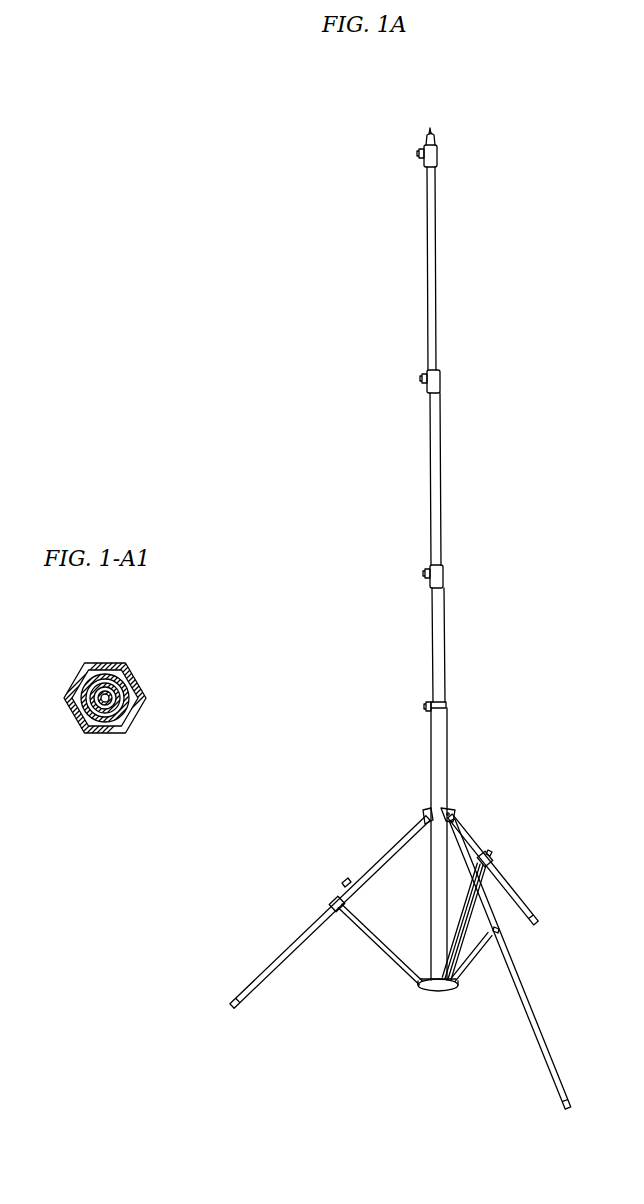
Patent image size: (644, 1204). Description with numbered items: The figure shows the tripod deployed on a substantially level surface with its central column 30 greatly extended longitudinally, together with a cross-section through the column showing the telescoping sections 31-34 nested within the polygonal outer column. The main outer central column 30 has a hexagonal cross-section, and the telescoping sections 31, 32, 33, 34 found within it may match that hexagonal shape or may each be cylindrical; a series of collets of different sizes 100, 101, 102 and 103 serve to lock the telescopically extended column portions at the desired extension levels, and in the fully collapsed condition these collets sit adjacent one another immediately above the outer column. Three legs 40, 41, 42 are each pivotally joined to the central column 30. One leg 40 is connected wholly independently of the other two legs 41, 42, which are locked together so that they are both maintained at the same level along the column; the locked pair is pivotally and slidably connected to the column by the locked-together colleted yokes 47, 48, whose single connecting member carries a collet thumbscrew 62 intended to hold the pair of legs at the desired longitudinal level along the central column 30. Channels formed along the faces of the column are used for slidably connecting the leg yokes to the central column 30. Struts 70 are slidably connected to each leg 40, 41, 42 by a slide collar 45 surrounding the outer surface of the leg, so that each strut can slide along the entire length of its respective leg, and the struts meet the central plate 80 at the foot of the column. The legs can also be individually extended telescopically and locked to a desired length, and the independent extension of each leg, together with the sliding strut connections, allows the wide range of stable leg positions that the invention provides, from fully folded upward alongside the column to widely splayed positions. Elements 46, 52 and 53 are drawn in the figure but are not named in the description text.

In FIG. 1A, the central column 30 is at (430, 786).
In FIG. 1-A1, the central column 30 is at (103, 664).
In FIG. 1A, the channels 31 is at (446, 694).
In FIG. 1A, the polygon side 32 is at (442, 518).
In FIG. 1A, the fourth pole section 33 is at (438, 322).
In FIG. 1A, the top pole section / tip 34 is at (434, 137).
In FIG. 1-A1, the telescoping pole sections 31-34 is at (126, 690).
In FIG. 1A, the independent leg 40 is at (392, 854).
In FIG. 1A, the locked leg 41 is at (474, 842).
In FIG. 1A, the locked leg 42 is at (535, 1002).
In FIG. 1A, the slide collar 45 is at (344, 884).
In FIG. 1A, the hub mount for first leg 46 is at (424, 812).
In FIG. 1A, the colleted yoke 47 is at (452, 808).
In FIG. 1A, the colleted yoke 48 is at (452, 806).
In FIG. 1A, the brace clamp on first leg 52 is at (331, 904).
In FIG. 1A, the brace clamp on second leg 53 is at (493, 858).
In FIG. 1A, the collet thumbscrew 62 is at (456, 815).
In FIG. 1A, the struts 70 is at (384, 944).
In FIG. 1A, the central plate 80 is at (437, 992).
In FIG. 1A, the collet 100 is at (425, 709).
In FIG. 1A, the collet 101 is at (425, 576).
In FIG. 1A, the collet 102 is at (422, 380).
In FIG. 1A, the collet 103 is at (421, 153).